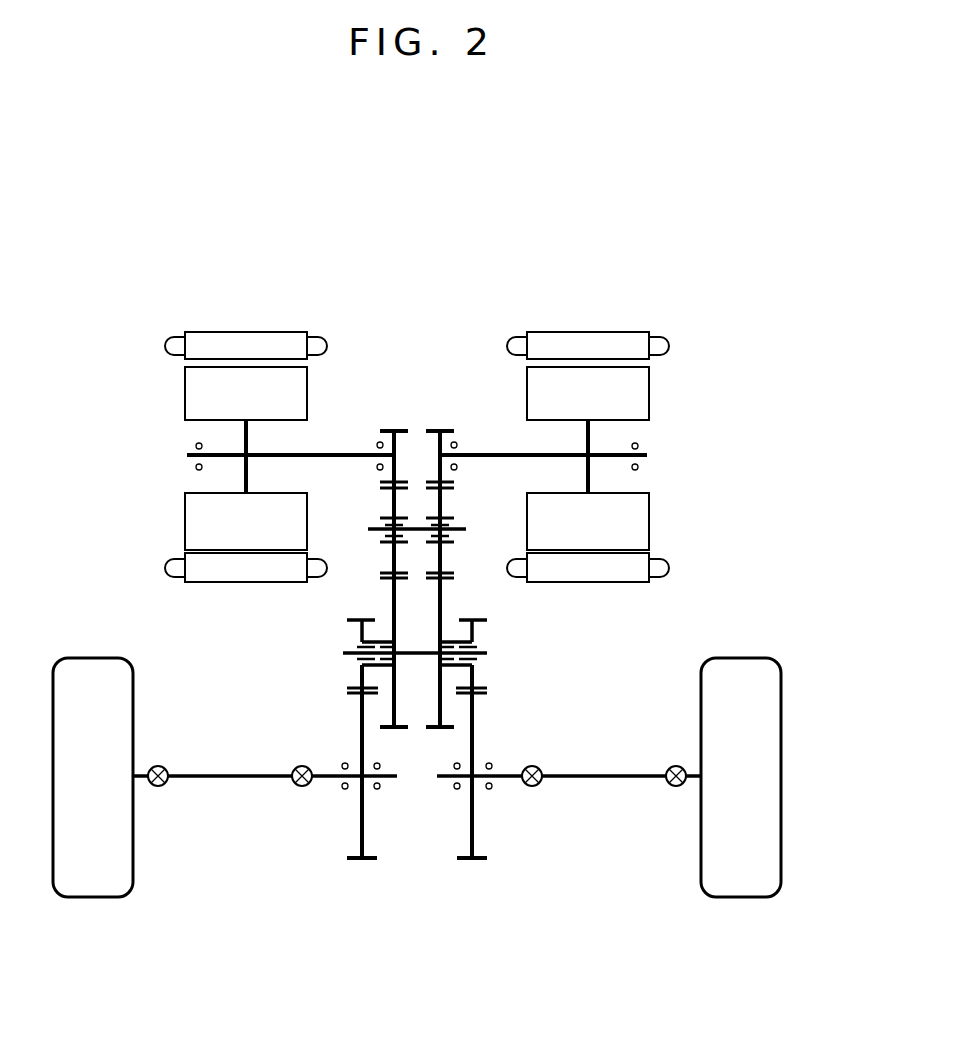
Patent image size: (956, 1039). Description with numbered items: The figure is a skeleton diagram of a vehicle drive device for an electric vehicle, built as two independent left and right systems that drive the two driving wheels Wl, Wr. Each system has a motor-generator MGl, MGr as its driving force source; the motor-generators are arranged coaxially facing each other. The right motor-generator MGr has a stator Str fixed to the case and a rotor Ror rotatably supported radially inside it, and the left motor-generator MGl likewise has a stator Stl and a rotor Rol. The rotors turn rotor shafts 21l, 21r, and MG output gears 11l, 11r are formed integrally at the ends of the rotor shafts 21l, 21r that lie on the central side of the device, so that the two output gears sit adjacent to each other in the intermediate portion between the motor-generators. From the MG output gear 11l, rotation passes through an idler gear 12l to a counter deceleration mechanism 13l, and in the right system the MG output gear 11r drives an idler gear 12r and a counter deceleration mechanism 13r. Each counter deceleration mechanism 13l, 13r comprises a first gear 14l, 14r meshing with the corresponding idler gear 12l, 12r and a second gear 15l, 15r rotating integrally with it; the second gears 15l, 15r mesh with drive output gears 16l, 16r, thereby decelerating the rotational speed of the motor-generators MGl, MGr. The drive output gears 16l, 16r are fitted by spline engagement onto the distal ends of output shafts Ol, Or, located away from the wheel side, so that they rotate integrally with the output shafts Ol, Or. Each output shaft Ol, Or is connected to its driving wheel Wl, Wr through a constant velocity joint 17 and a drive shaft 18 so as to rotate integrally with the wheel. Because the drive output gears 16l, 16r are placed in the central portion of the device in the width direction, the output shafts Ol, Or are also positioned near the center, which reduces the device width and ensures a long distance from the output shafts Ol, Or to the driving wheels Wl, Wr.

The left motor-generator MGl is at (220, 409).
The right motor-generator MGr is at (621, 409).
The stator of left motor-generator Stl is at (246, 457).
The stator of right motor-generator Str is at (588, 457).
The rotor of left motor-generator Rol is at (246, 458).
The rotor of right motor-generator Ror is at (588, 458).
The left rotor shaft 21l is at (319, 453).
The right rotor shaft 21r is at (509, 453).
The left MG output gear 11l is at (391, 440).
The right MG output gear 11r is at (443, 441).
The left idler gear 12l is at (387, 510).
The right idler gear 12r is at (443, 508).
The left counter deceleration mechanism 13l is at (340, 633).
The right counter deceleration mechanism 13r is at (493, 630).
The left first gear 14l is at (392, 606).
The right first gear 14r is at (443, 601).
The left second gear 15l is at (358, 676).
The right second gear 15r is at (476, 676).
The left drive output gear 16l is at (360, 736).
The right drive output gear 16r is at (476, 732).
The constant velocity joint 17 is at (297, 766).
The drive shaft 18 is at (190, 775).
The left output shaft Ol is at (322, 779).
The right output shaft Or is at (503, 779).
The left driving wheel Wl is at (95, 665).
The right driving wheel Wr is at (749, 665).